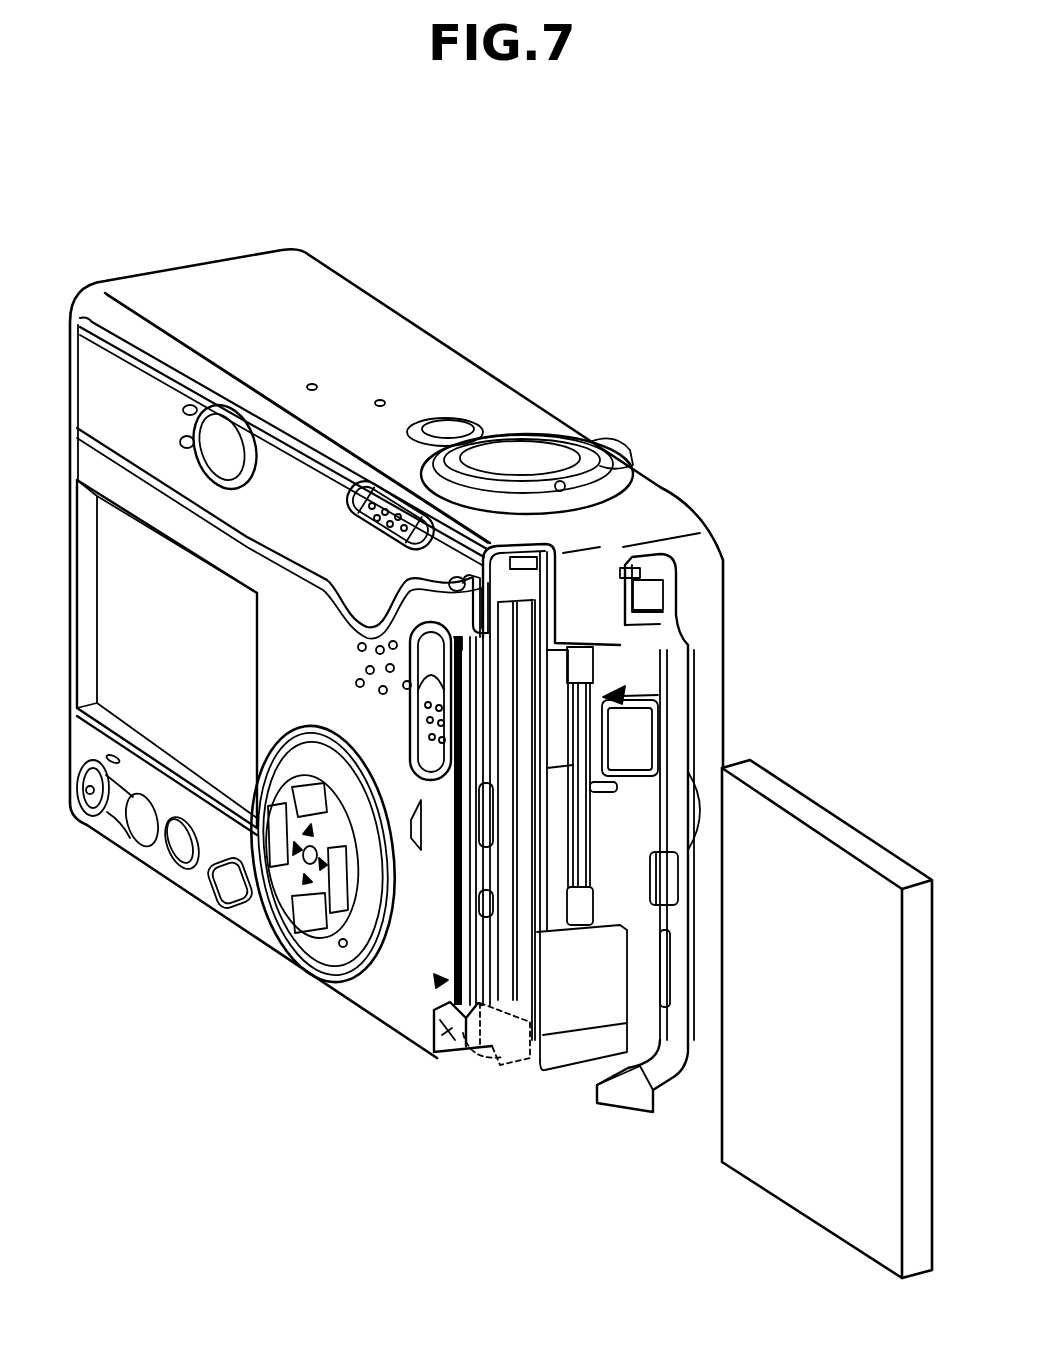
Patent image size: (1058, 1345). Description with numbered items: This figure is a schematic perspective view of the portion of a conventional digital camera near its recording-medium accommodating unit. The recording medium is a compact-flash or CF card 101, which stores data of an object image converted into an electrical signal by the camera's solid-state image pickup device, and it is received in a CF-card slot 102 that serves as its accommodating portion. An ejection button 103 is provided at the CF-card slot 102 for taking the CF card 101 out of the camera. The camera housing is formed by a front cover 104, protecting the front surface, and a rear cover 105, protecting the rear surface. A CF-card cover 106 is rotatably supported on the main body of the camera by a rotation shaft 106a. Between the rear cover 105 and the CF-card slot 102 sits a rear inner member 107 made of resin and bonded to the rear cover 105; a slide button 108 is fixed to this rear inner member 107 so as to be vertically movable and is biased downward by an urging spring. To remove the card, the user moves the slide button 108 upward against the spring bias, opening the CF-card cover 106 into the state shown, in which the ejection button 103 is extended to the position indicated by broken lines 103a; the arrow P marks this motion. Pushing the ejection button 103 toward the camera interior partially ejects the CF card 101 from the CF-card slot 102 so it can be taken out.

The CF card 101 is at (809, 1193).
The CF-card slot 102 is at (503, 620).
The ejection button 103 is at (447, 1048).
The broken lines 103a is at (517, 1047).
The front cover 104 is at (372, 293).
The rear cover 105 is at (147, 343).
The CF-card cover 106 is at (670, 618).
The rotation shaft 106a is at (582, 693).
The rear inner member 107 is at (482, 903).
The slide button 108 is at (422, 712).
The pivot direction P is at (440, 983).